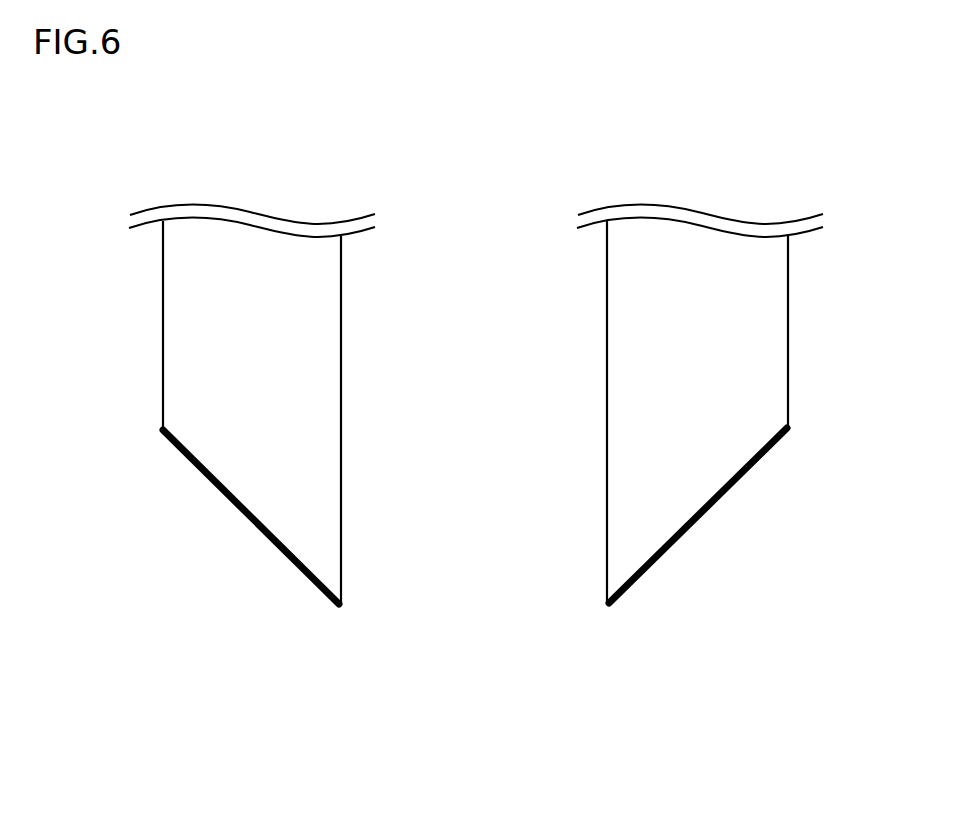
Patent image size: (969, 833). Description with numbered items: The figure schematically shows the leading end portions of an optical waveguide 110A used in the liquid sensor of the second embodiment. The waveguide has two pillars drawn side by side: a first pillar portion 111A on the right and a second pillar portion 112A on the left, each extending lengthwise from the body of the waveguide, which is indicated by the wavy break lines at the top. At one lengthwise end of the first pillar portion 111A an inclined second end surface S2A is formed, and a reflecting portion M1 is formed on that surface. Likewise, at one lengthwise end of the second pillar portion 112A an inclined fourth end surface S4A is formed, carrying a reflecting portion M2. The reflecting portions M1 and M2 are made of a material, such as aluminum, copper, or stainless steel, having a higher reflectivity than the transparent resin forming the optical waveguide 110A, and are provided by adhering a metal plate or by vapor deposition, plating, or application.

The optical waveguide 110A is at (480, 453).
The first pillar portion 111A is at (788, 326).
The second pillar portion 112A is at (163, 355).
The reflecting portion M1 is at (730, 490).
The reflecting portion M2 is at (230, 503).
The second end surface S2A is at (668, 539).
The fourth end surface S4A is at (297, 555).